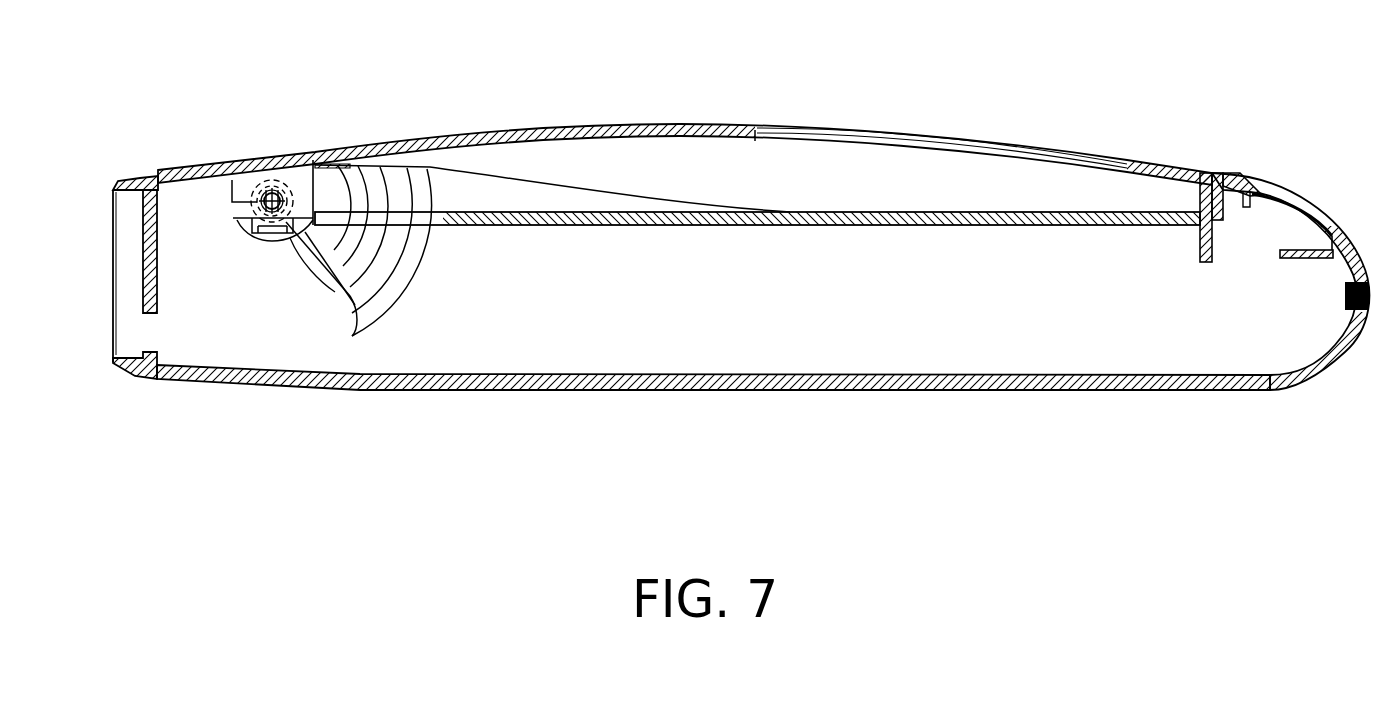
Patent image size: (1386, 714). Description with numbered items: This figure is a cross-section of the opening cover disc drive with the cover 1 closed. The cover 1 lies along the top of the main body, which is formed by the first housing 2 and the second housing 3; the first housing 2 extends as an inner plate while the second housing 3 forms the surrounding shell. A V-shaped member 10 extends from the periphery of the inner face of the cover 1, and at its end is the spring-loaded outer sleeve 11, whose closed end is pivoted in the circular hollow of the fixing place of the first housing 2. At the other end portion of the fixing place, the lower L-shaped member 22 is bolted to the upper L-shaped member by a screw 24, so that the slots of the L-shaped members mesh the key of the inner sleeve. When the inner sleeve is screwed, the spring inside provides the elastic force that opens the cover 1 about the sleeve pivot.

The cover 1 is at (719, 162).
The first housing 2 is at (881, 226).
The second housing 3 is at (1165, 392).
The V-shaped member 10 is at (410, 262).
The spring-loaded outer sleeve 11 is at (244, 173).
The lower L-shaped member 22 is at (246, 232).
The screw 24 is at (282, 235).